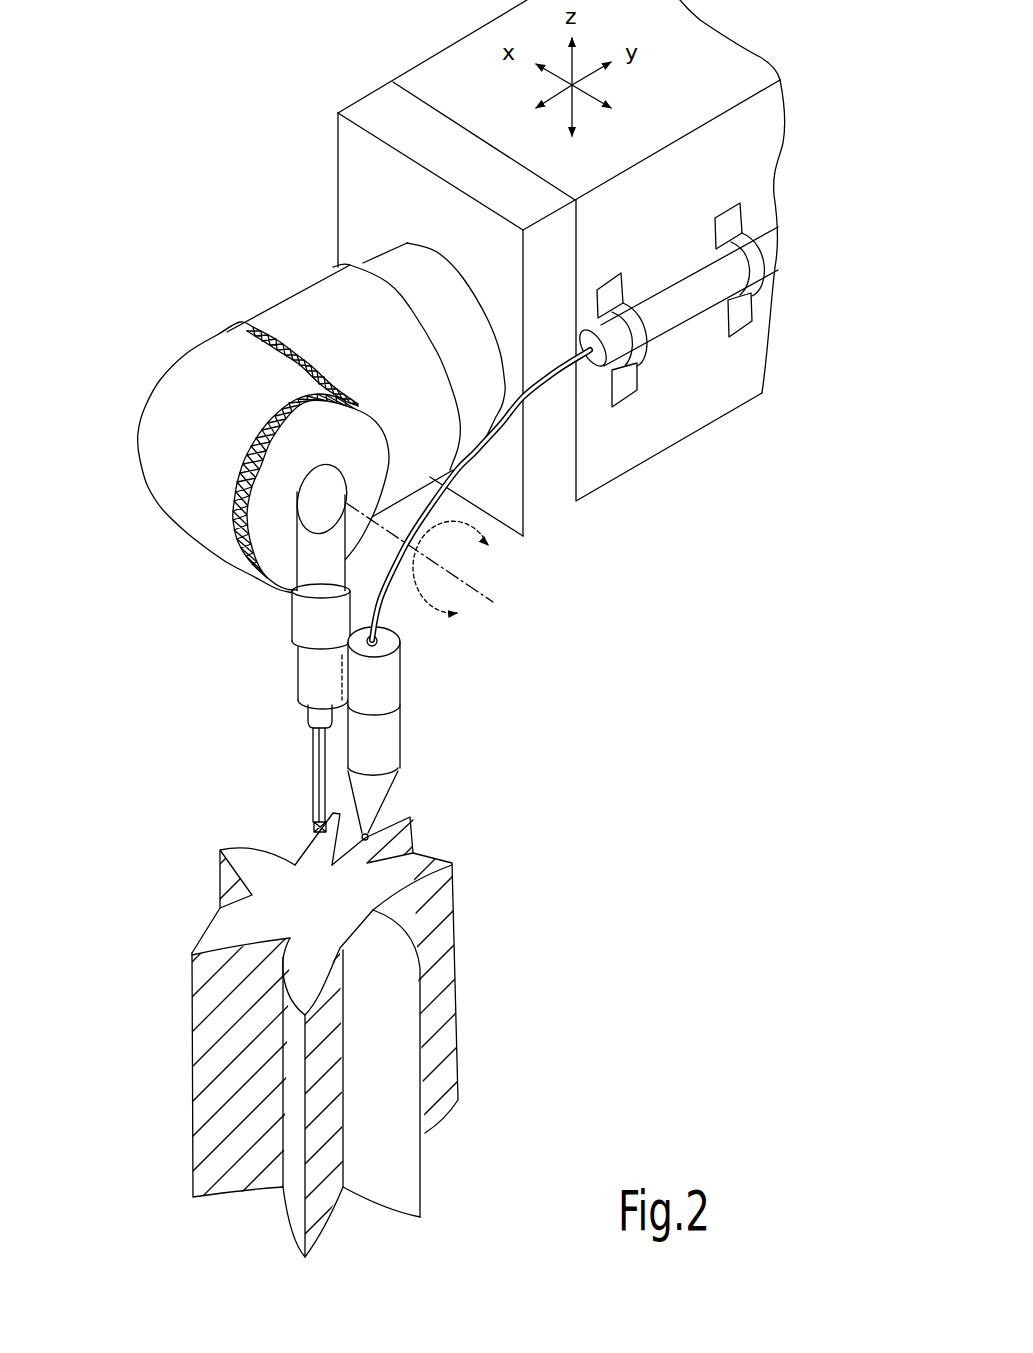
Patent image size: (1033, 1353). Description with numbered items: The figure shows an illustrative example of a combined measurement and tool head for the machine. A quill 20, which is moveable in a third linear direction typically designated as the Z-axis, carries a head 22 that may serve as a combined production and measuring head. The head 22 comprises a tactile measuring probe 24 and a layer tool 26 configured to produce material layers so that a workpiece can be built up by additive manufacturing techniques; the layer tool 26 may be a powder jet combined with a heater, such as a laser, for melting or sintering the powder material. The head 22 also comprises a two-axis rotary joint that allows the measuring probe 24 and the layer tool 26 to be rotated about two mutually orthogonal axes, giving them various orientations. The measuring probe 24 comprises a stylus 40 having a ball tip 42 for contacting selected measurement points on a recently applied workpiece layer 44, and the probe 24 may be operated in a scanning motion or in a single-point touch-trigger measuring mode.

The quill 20 is at (655, 430).
The head 22 is at (122, 330).
The tactile measuring probe 24 is at (282, 672).
The layer tool 26 is at (400, 735).
The stylus 40 is at (317, 775).
The ball tip 42 is at (315, 823).
The workpiece layer 44 is at (453, 948).